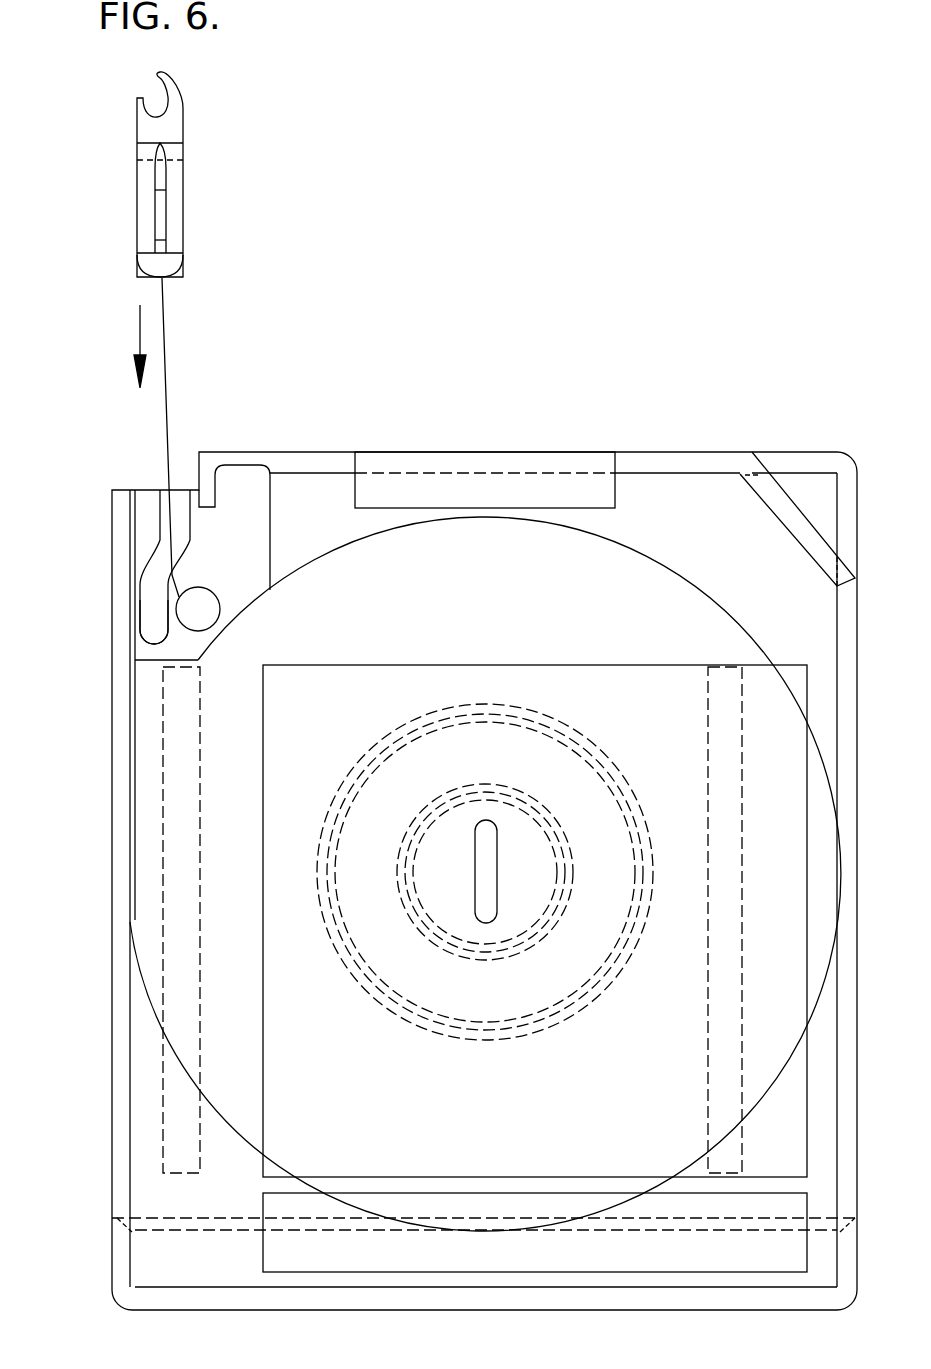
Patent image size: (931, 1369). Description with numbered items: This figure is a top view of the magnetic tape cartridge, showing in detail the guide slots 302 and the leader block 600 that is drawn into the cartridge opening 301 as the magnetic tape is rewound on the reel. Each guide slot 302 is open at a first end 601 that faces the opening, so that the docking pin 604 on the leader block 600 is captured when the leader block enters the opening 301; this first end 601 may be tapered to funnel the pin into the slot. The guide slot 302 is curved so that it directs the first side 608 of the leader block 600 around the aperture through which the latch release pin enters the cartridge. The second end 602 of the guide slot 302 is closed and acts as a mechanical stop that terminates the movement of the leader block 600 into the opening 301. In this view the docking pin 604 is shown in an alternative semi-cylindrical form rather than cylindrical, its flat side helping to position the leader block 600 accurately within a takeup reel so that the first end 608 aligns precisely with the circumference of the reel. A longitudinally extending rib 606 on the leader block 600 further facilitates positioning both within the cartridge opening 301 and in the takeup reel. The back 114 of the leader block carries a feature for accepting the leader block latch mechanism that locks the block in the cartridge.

The leader block 600 is at (192, 212).
The longitudinally extending rib 606 is at (157, 215).
The docking pin 604 is at (170, 265).
The first side of leader block 608 is at (148, 280).
The opening 301 is at (127, 475).
The first end of guide slot 601 is at (160, 490).
The back of leader block 114 is at (217, 593).
The guide slot 302 is at (162, 606).
The second end of guide slot 602 is at (172, 638).